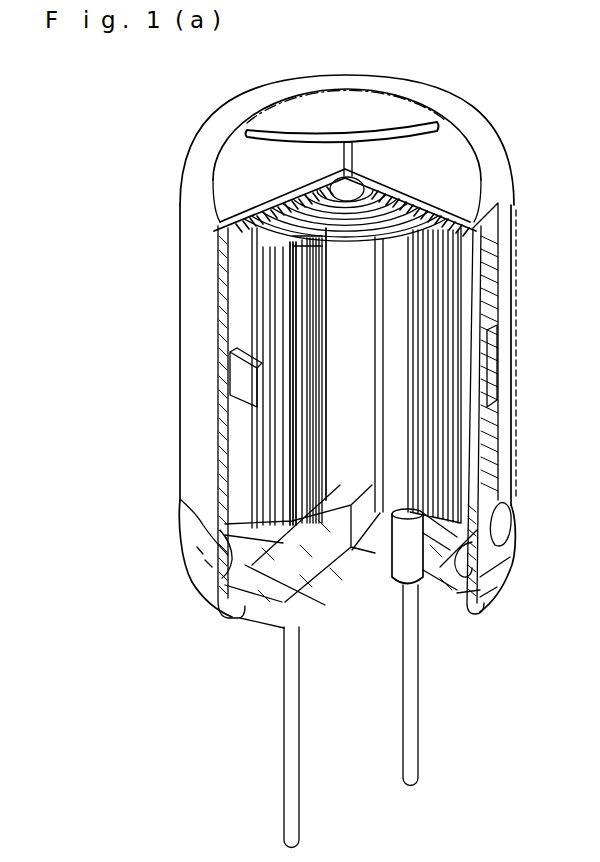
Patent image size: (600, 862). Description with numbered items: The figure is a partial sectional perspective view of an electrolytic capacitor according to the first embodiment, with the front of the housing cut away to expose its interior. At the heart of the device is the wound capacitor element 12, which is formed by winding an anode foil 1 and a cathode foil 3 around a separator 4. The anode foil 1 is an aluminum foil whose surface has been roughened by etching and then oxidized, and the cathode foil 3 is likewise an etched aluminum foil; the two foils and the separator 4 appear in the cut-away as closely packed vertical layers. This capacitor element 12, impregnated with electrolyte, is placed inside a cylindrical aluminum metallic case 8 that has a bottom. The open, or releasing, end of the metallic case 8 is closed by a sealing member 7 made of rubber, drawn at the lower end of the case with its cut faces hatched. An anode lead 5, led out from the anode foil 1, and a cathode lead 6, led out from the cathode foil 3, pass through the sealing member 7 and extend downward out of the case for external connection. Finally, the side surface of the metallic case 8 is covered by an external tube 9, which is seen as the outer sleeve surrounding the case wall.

The anode foil 1 is at (410, 305).
The cathode foil 3 is at (395, 288).
The separator 4 is at (430, 428).
The anode lead 5 is at (292, 790).
The cathode lead 6 is at (414, 730).
The sealing member 7 is at (296, 553).
The metallic case 8 is at (240, 157).
The external tube 9 is at (196, 180).
The capacitor element 12 is at (245, 425).